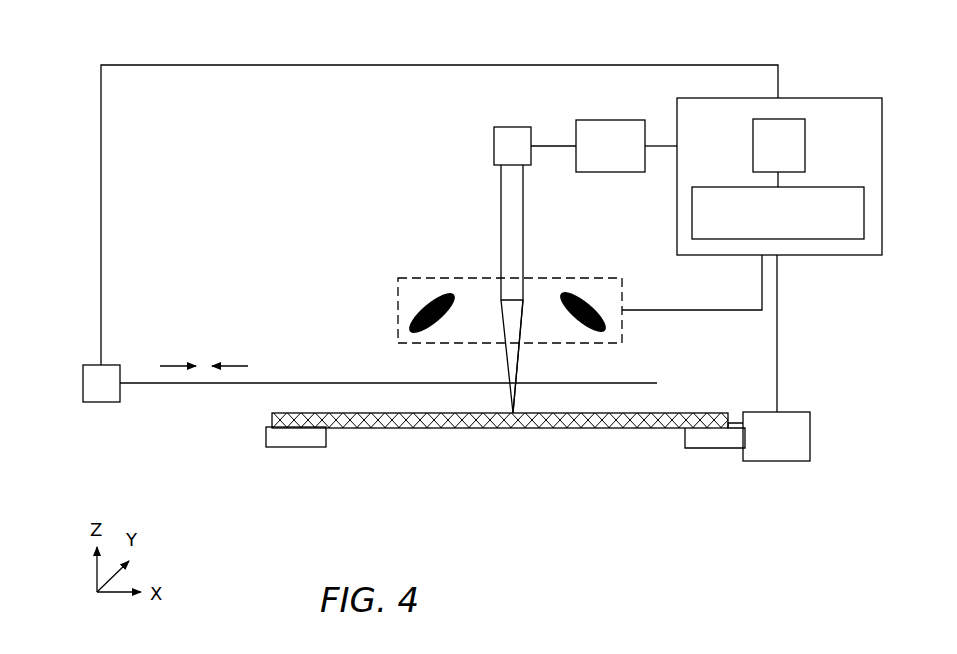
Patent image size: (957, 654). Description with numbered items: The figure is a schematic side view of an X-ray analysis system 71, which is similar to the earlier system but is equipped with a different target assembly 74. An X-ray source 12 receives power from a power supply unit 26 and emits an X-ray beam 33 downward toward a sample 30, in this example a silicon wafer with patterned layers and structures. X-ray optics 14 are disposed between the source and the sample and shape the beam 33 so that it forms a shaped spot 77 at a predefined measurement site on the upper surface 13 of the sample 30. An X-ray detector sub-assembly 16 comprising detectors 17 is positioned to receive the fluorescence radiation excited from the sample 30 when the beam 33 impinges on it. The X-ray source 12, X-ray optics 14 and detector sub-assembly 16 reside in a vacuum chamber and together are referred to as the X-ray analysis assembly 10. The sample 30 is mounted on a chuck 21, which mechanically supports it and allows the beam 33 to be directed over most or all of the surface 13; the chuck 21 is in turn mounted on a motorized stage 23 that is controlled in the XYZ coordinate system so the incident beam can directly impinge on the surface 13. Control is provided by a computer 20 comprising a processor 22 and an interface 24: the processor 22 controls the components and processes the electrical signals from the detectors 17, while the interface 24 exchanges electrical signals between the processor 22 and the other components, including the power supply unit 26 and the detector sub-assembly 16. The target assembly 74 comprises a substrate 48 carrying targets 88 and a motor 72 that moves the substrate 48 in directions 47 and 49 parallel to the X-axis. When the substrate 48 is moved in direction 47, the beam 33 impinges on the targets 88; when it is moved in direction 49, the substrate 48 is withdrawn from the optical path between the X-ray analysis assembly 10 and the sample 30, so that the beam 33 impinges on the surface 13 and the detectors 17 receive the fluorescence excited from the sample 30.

The X-ray analysis assembly 10 is at (330, 130).
The X-ray analysis system 71 is at (210, 181).
The target assembly 74 is at (158, 278).
The X-ray source 12 is at (494, 142).
The X-ray optics 14 is at (501, 192).
The X-ray detector sub-assembly 16 is at (398, 278).
The detectors 17 is at (442, 298).
The power supply unit 26 is at (610, 172).
The computer 20 is at (822, 255).
The processor 22 is at (706, 240).
The interface 24 is at (805, 142).
The X-ray beam 33 is at (506, 372).
The targets 88 is at (520, 374).
The substrate 48 is at (657, 386).
The direction 47 is at (164, 365).
The direction 49 is at (236, 365).
The motor 72 is at (100, 403).
The sample 30 is at (272, 414).
The upper surface 13 is at (428, 413).
The shaped spot 77 is at (513, 413).
The chuck 21 is at (292, 448).
The stage 23 is at (780, 462).